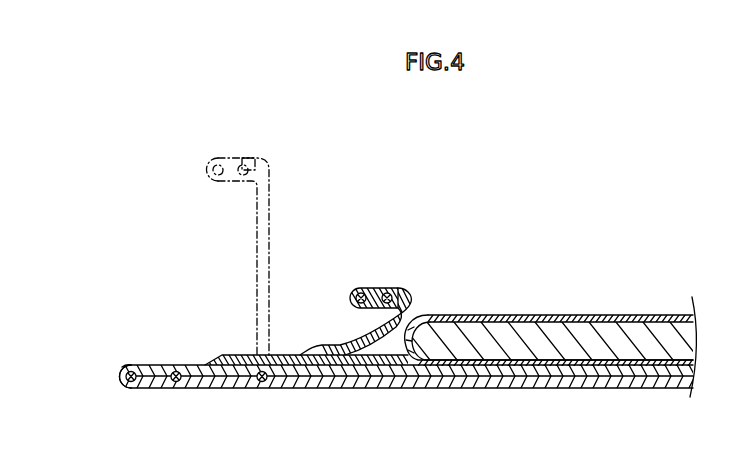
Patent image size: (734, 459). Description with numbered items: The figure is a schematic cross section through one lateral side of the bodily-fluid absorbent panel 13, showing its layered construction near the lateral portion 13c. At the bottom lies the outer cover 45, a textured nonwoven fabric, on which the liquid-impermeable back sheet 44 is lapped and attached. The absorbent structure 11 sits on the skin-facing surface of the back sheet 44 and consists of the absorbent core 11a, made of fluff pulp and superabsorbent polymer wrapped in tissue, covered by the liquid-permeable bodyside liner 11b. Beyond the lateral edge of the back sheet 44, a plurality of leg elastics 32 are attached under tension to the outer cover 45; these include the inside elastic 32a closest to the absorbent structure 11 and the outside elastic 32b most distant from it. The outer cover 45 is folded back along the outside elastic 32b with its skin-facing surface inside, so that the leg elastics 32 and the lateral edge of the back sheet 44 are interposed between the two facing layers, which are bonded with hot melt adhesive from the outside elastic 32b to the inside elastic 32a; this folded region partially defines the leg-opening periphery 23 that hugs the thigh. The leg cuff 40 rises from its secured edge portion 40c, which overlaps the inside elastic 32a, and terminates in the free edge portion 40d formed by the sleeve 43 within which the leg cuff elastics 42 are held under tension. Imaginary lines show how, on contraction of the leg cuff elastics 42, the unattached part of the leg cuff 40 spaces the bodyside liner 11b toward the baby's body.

The bodily-fluid absorbent panel 13 is at (566, 176).
The lateral portion 13c is at (120, 378).
The leg-opening periphery 23 is at (125, 368).
The leg elastics 32 is at (176, 390).
The inside elastic 32a is at (262, 390).
The outside elastic 32b is at (132, 390).
The leg cuff 40 is at (257, 248).
The secured edge portion 40c is at (258, 353).
The free edge portion 40d is at (372, 287).
The leg cuff elastics 42 is at (249, 158).
The sleeve 43 is at (388, 262).
The absorbent structure 11 is at (550, 310).
The absorbent core 11a is at (534, 328).
The bodyside liner 11b is at (652, 316).
The back sheet 44 is at (472, 370).
The outer cover 45 is at (397, 389).